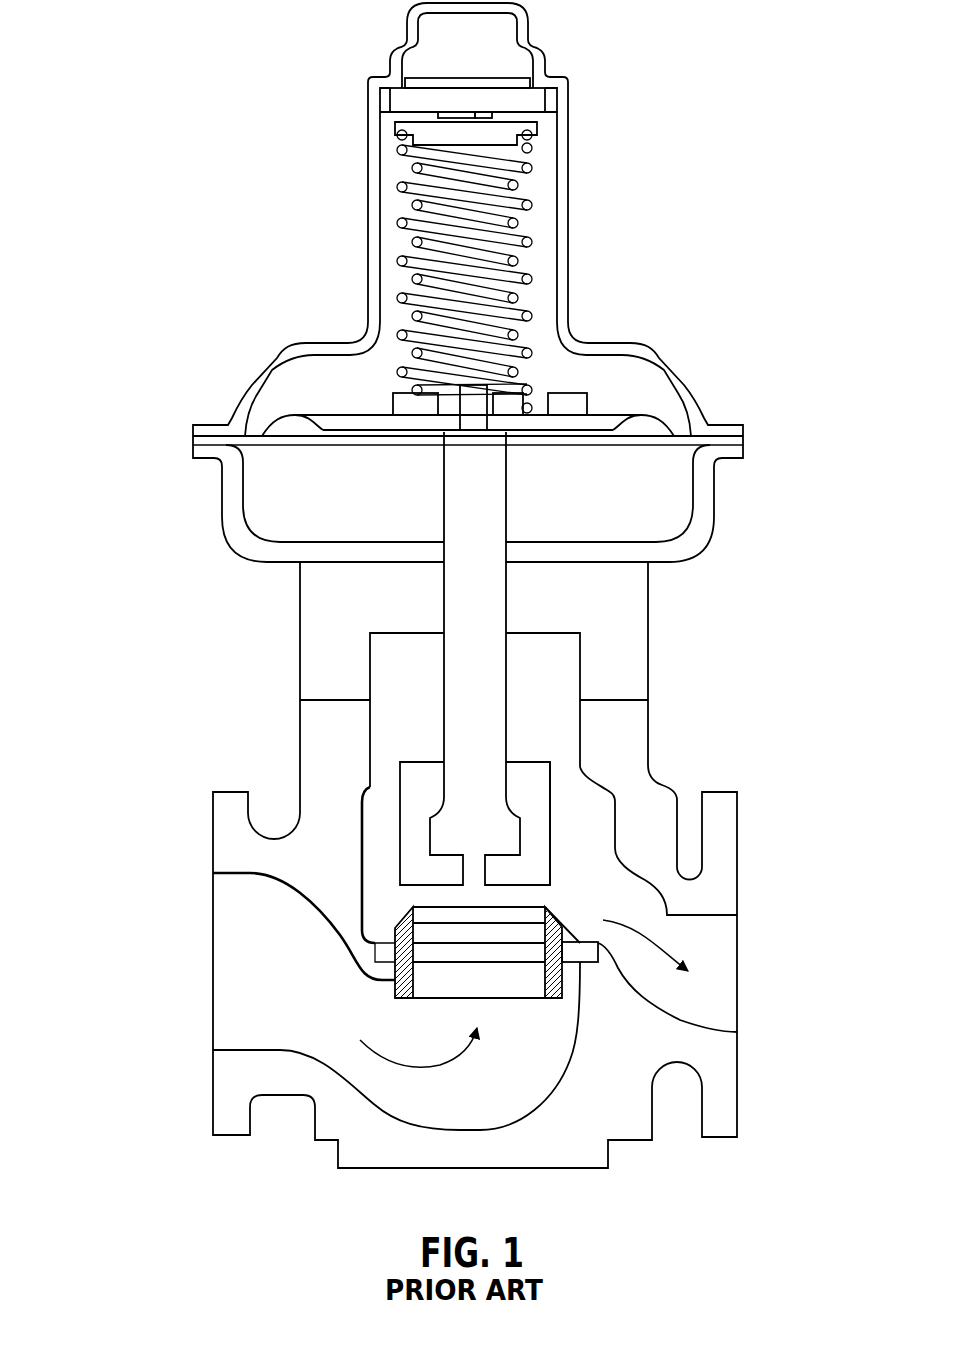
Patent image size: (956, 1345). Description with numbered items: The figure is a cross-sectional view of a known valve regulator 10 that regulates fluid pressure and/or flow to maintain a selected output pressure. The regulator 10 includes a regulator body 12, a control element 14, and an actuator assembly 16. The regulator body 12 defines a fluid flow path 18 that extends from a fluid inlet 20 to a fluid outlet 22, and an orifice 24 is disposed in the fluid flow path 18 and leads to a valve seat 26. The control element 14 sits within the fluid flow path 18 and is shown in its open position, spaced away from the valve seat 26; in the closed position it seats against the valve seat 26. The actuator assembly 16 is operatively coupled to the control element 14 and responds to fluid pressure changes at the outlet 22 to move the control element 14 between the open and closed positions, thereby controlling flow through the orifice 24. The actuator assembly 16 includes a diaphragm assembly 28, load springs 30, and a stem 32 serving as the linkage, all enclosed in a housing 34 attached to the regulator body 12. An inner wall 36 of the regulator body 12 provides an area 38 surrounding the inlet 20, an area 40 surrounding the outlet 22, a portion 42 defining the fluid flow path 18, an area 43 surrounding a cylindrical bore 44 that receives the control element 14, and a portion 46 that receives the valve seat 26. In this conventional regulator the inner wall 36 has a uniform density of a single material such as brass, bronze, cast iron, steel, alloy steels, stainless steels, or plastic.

The valve regulator 10 is at (158, 128).
The regulator body 12 is at (128, 828).
The control element 14 is at (540, 790).
The actuator assembly 16 is at (341, 240).
The fluid flow path 18 is at (418, 1047).
The fluid inlet 20 is at (213, 992).
The fluid outlet 22 is at (737, 982).
The orifice 24 is at (535, 907).
The valve seat 26 is at (562, 927).
The diaphragm assembly 28 is at (658, 403).
The load springs 30 is at (532, 242).
The stem 32 is at (488, 605).
The housing 34 is at (212, 430).
The inner wall 36 is at (235, 813).
The area surrounding the inlet 38 is at (227, 1107).
The area surrounding the outlet 40 is at (728, 1092).
The portion defining the fluid flow path 42 is at (580, 1145).
The area surrounding the cylindrical bore 43 is at (332, 742).
The cylindrical bore 44 is at (373, 742).
The portion to receive the valve seat 46 is at (590, 953).